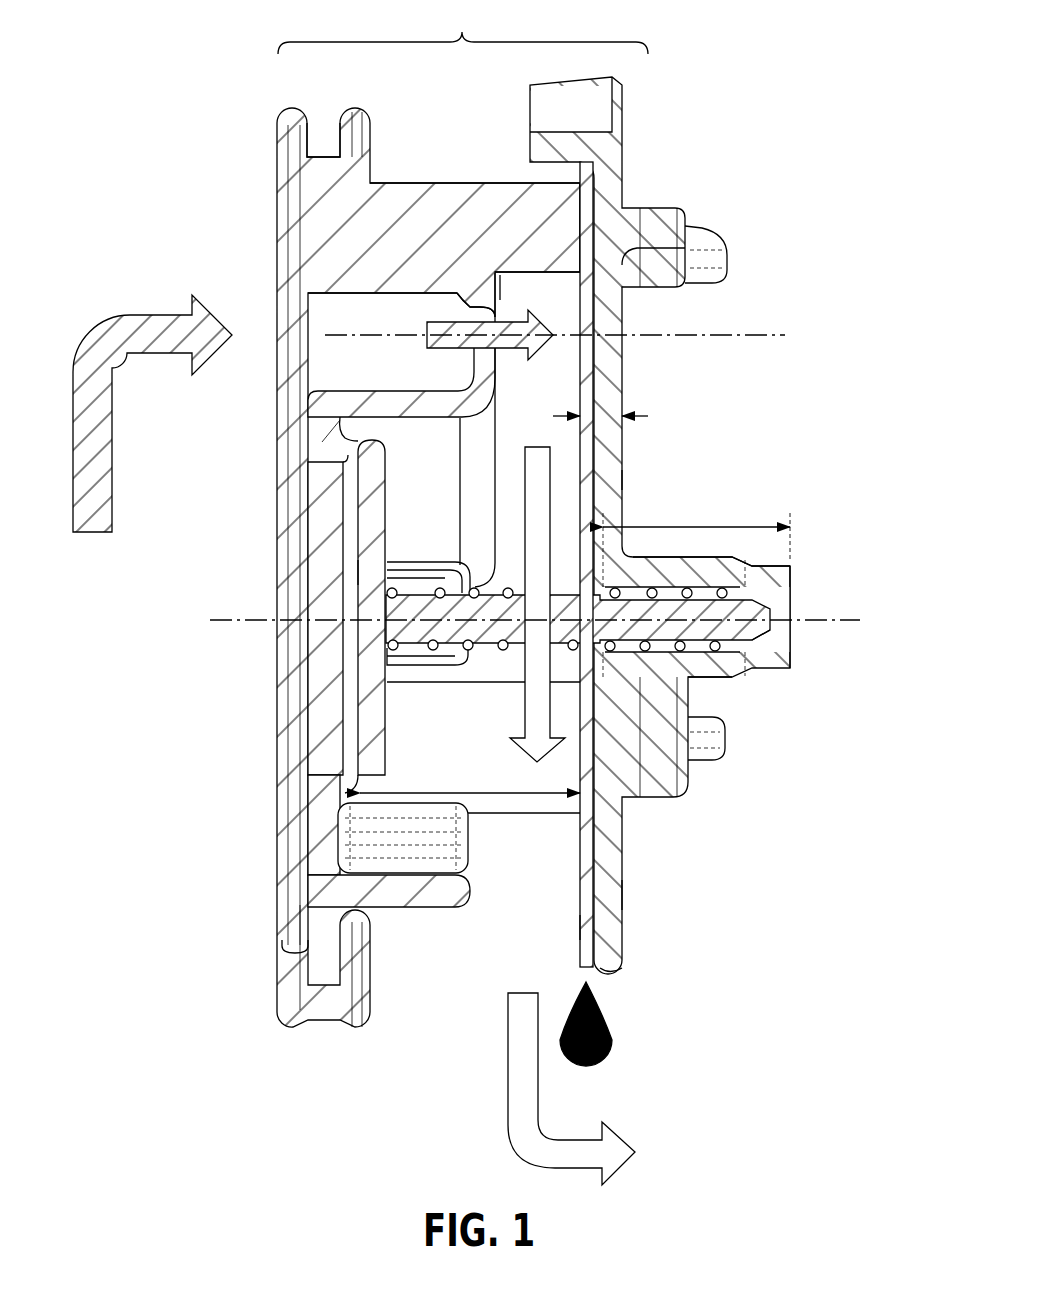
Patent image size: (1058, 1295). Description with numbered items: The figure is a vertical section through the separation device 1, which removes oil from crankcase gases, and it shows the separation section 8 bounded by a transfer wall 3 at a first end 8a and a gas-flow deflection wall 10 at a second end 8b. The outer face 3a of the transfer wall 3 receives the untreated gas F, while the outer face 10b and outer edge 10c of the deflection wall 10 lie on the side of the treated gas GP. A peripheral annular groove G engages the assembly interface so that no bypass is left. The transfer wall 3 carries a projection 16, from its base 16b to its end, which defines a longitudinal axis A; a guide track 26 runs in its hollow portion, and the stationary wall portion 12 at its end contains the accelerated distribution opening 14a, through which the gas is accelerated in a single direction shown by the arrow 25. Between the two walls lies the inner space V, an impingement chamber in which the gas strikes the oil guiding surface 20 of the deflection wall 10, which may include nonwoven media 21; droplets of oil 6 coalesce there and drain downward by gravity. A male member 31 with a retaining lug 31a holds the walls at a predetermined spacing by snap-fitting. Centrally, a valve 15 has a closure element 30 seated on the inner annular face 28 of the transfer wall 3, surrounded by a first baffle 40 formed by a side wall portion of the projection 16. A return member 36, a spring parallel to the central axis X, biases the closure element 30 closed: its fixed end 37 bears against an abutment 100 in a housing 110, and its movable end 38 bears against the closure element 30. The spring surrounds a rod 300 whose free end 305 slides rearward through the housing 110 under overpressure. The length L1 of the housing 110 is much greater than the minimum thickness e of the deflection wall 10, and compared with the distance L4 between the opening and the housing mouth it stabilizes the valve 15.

The separation device 1 is at (211, 1082).
The transfer wall 3 is at (290, 1037).
The outer face 3a is at (290, 947).
The oil 6 is at (612, 1047).
The separation section 8 is at (463, 30).
The first end 8a is at (308, 860).
The second end 8b is at (626, 899).
The gas-flow deflection wall 10 is at (623, 149).
The outer face 10b is at (626, 482).
The outer edge 10c is at (622, 973).
The stationary wall portion 12 is at (500, 375).
The accelerated distribution opening 14a is at (480, 307).
The valve 15 is at (355, 573).
The projection 16 is at (403, 398).
The base of the projection 16b is at (337, 422).
The oil guiding surface 20 is at (580, 927).
The nonwoven media 21 is at (597, 388).
The arrow 25 is at (428, 335).
The guide track 26 is at (373, 293).
The inner annular face 28 is at (360, 790).
The closure element 30 is at (363, 514).
The male member 31 is at (553, 270).
The retaining lug 31a is at (702, 242).
The return member 36 is at (505, 650).
The fixed end 37 is at (730, 591).
The movable end 38 is at (390, 649).
The first baffle 40 is at (395, 910).
The abutment 100 is at (742, 649).
The housing 110 is at (792, 619).
The rod 300 is at (668, 651).
The free end 305 is at (770, 643).
The longitudinal axis A is at (766, 331).
The central axis X is at (839, 614).
The untreated gas F is at (143, 327).
The peripheral annular groove G is at (326, 125).
The treated gas GP is at (522, 1074).
The inner space V is at (550, 430).
The minimum thickness e is at (610, 417).
The length of the housing L1 is at (696, 528).
The distance L4 is at (470, 777).